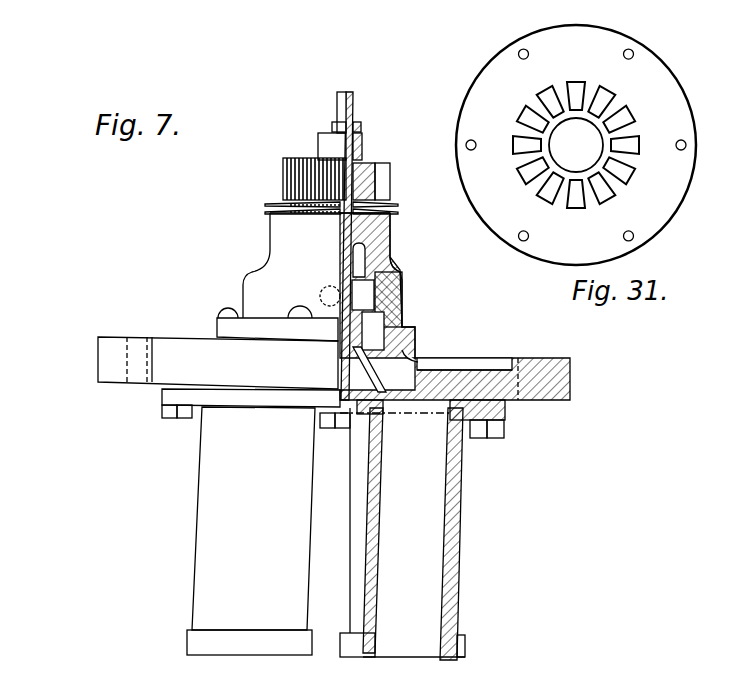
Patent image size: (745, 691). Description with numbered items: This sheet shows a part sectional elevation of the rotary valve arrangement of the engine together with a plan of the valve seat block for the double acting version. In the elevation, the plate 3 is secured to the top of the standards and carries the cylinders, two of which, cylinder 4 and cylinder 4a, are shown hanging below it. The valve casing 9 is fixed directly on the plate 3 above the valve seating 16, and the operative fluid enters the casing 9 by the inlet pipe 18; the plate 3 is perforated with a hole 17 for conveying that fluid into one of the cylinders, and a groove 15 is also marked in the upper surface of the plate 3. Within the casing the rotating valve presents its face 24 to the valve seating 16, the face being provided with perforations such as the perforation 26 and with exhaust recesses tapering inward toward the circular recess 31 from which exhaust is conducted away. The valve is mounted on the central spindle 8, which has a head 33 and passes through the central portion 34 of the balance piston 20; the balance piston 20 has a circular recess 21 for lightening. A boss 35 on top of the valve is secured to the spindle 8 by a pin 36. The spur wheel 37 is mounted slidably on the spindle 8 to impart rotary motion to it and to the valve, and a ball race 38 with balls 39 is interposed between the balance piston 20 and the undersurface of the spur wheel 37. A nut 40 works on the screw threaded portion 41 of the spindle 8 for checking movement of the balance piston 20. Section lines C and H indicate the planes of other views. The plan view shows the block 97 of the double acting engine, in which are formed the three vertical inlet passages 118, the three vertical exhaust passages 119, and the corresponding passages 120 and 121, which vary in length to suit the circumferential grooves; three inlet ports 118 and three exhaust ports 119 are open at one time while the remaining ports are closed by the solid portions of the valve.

In FIG. 7, the plate 3 is at (98, 360).
In FIG. 7, the cylinder 4 is at (402, 530).
In FIG. 7, the cylinder 4a is at (251, 531).
In FIG. 7, the central spindle 8 is at (345, 96).
In FIG. 7, the valve casing 9 is at (268, 246).
In FIG. 7, the groove 15 is at (500, 362).
In FIG. 7, the valve seating 16 is at (415, 357).
In FIG. 7, the hole 17 is at (390, 395).
In FIG. 7, the inlet pipe 18 is at (309, 315).
In FIG. 7, the balance piston 20 is at (395, 262).
In FIG. 7, the circular recess 21 is at (403, 282).
In FIG. 7, the face of the rotating valve 24 is at (425, 365).
In FIG. 7, the perforation 26 is at (373, 331).
In FIG. 7, the circular recess 31 is at (345, 350).
In FIG. 7, the head 33 is at (335, 340).
In FIG. 7, the central portion of the balance piston 34 is at (352, 262).
In FIG. 7, the boss 35 is at (363, 295).
In FIG. 7, the pin 36 is at (328, 296).
In FIG. 7, the spur wheel 37 is at (283, 177).
In FIG. 7, the ball race 38 is at (290, 205).
In FIG. 7, the balls 39 is at (410, 243).
In FIG. 7, the nut 40 is at (318, 140).
In FIG. 7, the screw threaded portion 41 is at (336, 126).
In FIG. 31, the block 97 is at (478, 98).
In FIG. 31, the vertical inlet passages 118 is at (608, 95).
In FIG. 31, the vertical exhaust passages 119 is at (547, 88).
In FIG. 31, the vertical inlet passages 120 is at (528, 113).
In FIG. 31, the passages 121 is at (584, 84).
In FIG. 7, the section line C is at (215, 301).
In FIG. 7, the section line H is at (415, 317).